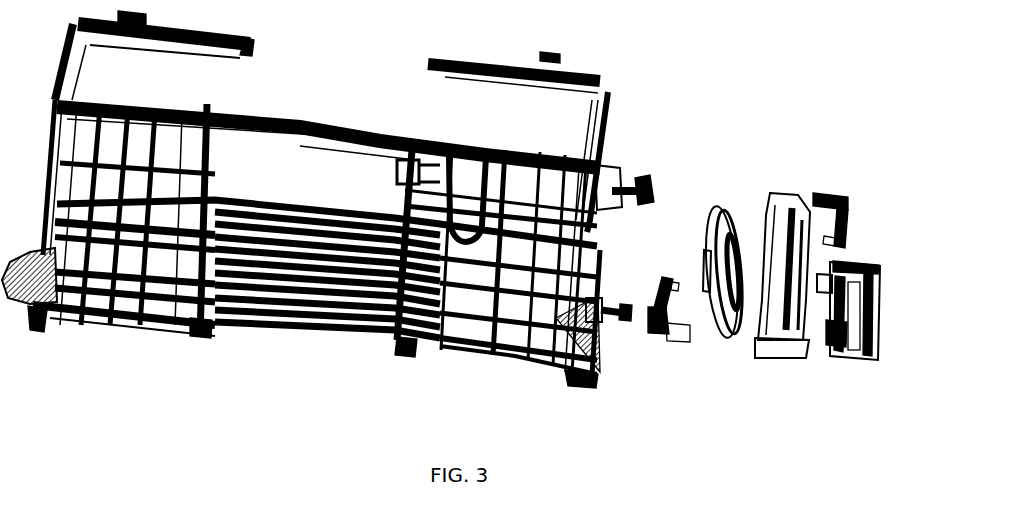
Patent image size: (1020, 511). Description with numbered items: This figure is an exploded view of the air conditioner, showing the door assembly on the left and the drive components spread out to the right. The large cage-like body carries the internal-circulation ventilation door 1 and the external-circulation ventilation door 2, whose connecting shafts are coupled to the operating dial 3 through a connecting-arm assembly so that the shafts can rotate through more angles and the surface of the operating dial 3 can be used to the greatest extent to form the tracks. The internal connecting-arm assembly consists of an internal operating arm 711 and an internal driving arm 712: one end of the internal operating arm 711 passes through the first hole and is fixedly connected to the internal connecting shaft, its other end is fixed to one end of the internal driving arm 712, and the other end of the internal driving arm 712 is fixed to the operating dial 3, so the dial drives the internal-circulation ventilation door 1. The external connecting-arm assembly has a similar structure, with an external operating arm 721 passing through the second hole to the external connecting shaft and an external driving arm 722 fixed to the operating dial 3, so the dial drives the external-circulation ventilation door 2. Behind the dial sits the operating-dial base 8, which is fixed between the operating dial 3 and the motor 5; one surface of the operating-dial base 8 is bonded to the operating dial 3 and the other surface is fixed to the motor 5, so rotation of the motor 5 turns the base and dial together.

The internal-circulation ventilation door 1 is at (308, 287).
The external-circulation ventilation door 2 is at (307, 160).
The operating dial 3 is at (737, 207).
The motor 5 is at (858, 345).
The operating-dial base 8 is at (798, 193).
The internal operating arm 711 is at (618, 322).
The internal driving arm 712 is at (660, 340).
The external operating arm 721 is at (651, 178).
The external driving arm 722 is at (845, 196).